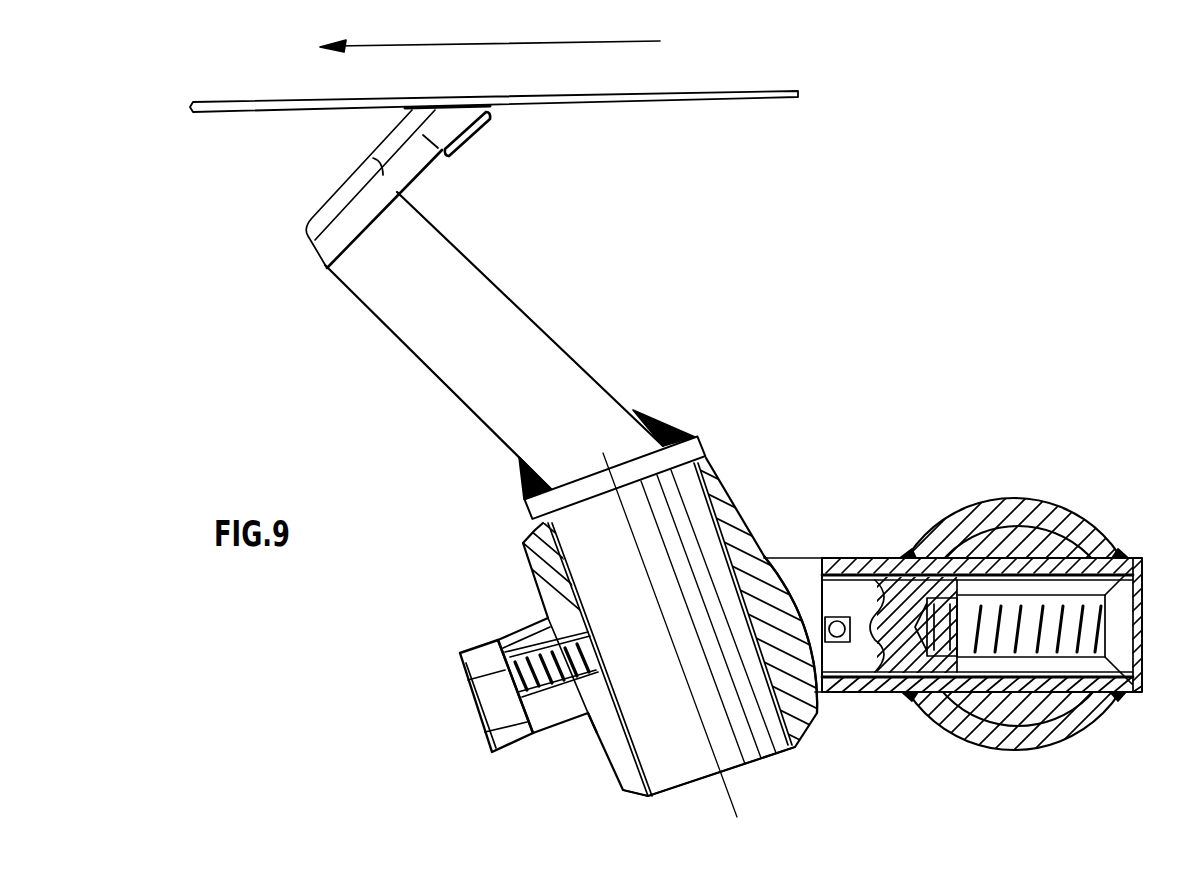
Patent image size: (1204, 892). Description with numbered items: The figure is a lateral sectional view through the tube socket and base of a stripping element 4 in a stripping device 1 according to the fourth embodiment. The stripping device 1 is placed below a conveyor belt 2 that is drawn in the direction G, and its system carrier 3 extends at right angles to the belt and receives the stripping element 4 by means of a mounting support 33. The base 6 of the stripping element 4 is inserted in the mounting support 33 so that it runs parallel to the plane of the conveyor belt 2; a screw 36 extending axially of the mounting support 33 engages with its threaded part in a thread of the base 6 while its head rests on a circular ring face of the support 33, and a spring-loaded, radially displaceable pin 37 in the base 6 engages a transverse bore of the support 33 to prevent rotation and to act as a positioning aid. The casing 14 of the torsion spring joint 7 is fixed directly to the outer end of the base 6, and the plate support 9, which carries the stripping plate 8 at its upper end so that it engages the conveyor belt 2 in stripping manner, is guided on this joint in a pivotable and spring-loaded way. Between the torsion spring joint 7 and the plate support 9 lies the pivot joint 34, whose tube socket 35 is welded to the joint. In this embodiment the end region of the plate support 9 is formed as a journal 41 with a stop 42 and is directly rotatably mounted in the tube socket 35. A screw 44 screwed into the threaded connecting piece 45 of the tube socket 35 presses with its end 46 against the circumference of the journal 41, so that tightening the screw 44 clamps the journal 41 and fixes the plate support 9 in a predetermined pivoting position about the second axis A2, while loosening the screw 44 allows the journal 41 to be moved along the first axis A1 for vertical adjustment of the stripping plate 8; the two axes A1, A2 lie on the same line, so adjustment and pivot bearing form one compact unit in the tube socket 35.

The stripping device 1 is at (919, 591).
The conveyor belt 2 is at (735, 100).
The system carrier 3 is at (1052, 514).
The stripping element 4 is at (436, 375).
The base 6 is at (853, 603).
The torsion spring joint 7 is at (770, 547).
The stripping plate 8 is at (473, 136).
The plate support 9 is at (405, 327).
The casing 14 is at (790, 558).
The mounting support 33 is at (1120, 695).
The pivot joint 34 is at (525, 534).
The tube socket 35 is at (597, 740).
The screw 36 is at (1125, 606).
The pin 37 is at (876, 697).
The journal 41 is at (673, 767).
The stop 42 is at (535, 510).
The screw 44 is at (507, 738).
The connecting piece 45 is at (531, 635).
The end of the screw 46 is at (587, 652).
The first axis A1 is at (730, 643).
The second axis A2 is at (748, 818).
The direction G is at (501, 46).